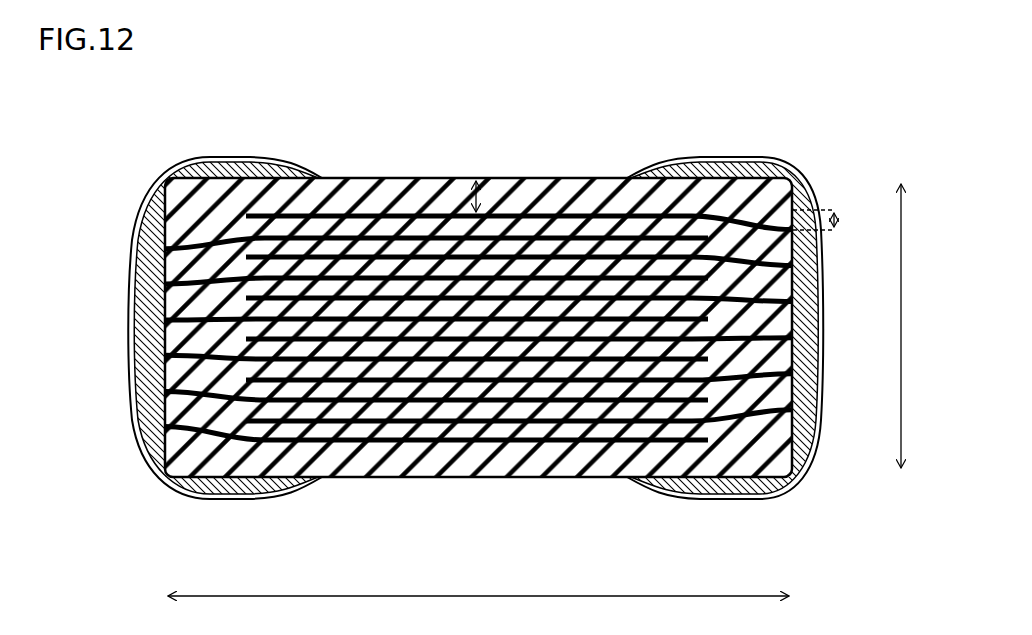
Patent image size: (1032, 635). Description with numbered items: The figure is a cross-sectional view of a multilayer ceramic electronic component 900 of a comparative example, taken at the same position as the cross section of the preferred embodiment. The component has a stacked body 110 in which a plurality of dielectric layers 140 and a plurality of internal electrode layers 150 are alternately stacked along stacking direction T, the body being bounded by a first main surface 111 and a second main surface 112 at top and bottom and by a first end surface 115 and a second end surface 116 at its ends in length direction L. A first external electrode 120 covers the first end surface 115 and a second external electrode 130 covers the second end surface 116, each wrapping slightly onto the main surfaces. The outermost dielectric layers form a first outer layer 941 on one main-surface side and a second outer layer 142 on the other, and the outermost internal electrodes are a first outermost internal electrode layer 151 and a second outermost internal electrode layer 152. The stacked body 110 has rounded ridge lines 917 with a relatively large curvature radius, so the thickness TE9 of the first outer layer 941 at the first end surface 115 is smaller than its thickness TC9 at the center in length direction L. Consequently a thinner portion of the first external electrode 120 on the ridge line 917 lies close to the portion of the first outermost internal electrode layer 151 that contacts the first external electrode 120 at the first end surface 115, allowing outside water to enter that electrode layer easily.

The multilayer ceramic electronic component 900 is at (834, 129).
The stacked body 110 is at (628, 177).
The first main surface 111 is at (409, 176).
The second main surface 112 is at (610, 480).
The first end surface 115 is at (796, 323).
The second end surface 116 is at (158, 337).
The rounded ridge line 917 is at (166, 180).
The dielectric layer 140 is at (352, 197).
The second outer layer 142 is at (546, 457).
The internal electrode layer 150 is at (440, 548).
The first outermost internal electrode layer 151 is at (364, 216).
The second outermost internal electrode layer 152 is at (420, 443).
The first outer layer 941 is at (548, 205).
The second external electrode 130 is at (145, 158).
The first external electrode 120 is at (900, 508).
The thickness of first outer layer at center TC9 is at (480, 178).
The thickness of first outer layer at first end surface TE9 is at (835, 221).
The stacking direction T is at (890, 326).
The length direction L is at (478, 611).